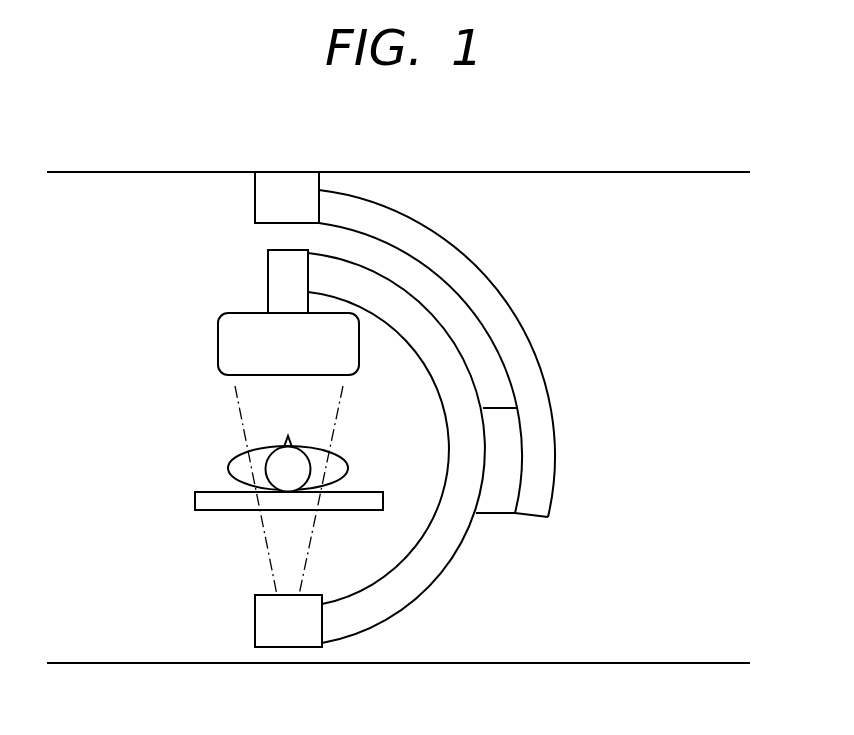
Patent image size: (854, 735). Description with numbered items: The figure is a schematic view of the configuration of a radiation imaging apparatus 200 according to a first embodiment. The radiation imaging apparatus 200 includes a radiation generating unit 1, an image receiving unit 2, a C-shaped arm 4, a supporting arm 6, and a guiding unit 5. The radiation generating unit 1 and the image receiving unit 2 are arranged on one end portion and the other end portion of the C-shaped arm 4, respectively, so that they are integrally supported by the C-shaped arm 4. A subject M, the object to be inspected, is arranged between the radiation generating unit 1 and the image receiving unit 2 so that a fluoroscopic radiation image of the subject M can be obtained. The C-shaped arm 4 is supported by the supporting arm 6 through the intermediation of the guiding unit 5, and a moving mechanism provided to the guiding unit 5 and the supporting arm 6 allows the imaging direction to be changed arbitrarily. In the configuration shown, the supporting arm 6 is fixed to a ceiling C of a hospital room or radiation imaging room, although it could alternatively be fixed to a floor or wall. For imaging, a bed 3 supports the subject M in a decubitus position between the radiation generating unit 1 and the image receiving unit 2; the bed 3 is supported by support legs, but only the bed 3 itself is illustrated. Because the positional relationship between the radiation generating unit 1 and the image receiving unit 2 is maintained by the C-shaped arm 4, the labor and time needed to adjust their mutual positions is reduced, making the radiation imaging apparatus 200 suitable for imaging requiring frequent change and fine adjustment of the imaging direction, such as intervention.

The radiation generating unit 1 is at (260, 625).
The image receiving unit 2 is at (233, 347).
The bed 3 is at (195, 507).
The C-shaped arm 4 is at (430, 573).
The guiding unit 5 is at (497, 503).
The supporting arm 6 is at (495, 300).
The ceiling C is at (203, 160).
The subject M is at (228, 470).
The radiation imaging apparatus 200 is at (652, 436).